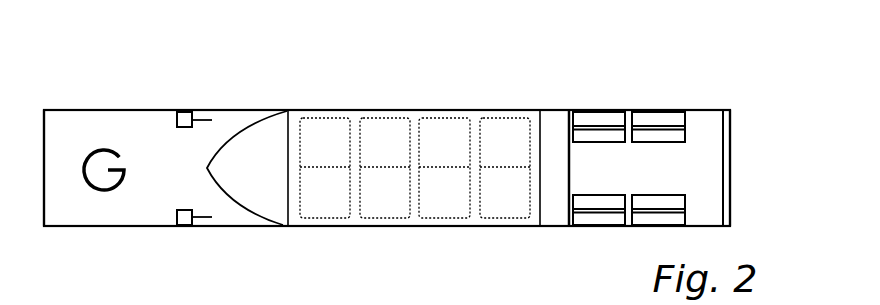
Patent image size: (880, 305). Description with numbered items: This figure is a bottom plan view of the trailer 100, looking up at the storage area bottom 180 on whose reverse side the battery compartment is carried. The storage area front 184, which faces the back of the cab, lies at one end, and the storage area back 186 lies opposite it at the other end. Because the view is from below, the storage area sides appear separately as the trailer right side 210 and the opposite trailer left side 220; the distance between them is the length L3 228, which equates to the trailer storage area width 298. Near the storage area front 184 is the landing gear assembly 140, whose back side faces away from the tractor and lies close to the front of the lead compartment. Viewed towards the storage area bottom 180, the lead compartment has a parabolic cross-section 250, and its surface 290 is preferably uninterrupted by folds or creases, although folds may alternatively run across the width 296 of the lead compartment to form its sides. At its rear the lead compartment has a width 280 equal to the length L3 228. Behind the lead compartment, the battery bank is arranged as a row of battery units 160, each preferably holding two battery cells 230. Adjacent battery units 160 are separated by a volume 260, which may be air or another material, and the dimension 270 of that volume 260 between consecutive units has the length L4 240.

The trailer 100 is at (195, 75).
The storage area front 184 is at (42, 155).
The storage area back 186 is at (732, 147).
The trailer left side 220 is at (234, 110).
The trailer right side 210 is at (230, 227).
The storage area bottom 180 is at (147, 197).
The landing gear assembly 140 is at (184, 110).
The parabolic cross-section 250 is at (217, 176).
The surface 290 is at (275, 198).
The width 296 is at (265, 125).
The width 280 is at (294, 140).
The battery cells 230 is at (392, 203).
The battery unit 160 is at (497, 208).
The volume 260 is at (356, 200).
The length L4 240 is at (327, 138).
The dimension 270 is at (447, 138).
The trailer storage area width 298 is at (518, 225).
The length L3 228 is at (732, 111).